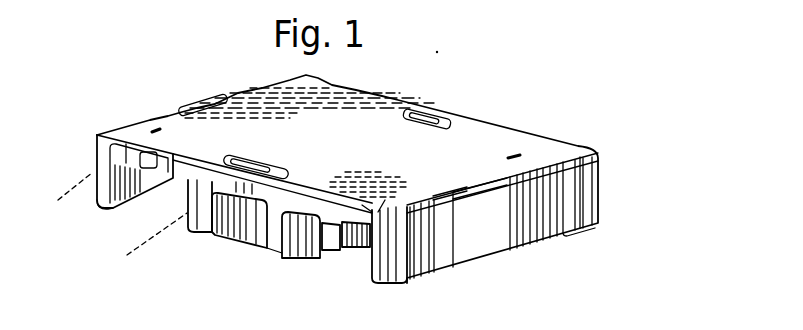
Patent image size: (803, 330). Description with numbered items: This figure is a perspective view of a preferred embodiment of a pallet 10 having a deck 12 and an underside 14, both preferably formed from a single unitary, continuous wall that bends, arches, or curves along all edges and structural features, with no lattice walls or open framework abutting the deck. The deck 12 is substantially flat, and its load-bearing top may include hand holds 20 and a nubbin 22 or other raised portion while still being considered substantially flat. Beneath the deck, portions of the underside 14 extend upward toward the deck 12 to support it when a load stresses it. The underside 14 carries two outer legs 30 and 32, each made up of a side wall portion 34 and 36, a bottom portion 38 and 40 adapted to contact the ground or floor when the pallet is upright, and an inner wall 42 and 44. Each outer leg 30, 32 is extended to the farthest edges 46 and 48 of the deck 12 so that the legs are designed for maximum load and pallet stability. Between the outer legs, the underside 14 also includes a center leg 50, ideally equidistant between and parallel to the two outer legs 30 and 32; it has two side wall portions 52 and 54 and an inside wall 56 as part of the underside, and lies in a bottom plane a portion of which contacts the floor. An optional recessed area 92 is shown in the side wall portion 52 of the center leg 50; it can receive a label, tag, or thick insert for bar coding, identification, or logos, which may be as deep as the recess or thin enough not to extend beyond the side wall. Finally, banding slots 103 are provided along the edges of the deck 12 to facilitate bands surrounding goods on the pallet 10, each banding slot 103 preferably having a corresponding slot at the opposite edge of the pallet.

The pallet 10 is at (553, 150).
The deck 12 is at (513, 142).
The underside 14 is at (213, 240).
The hand holds 20 is at (453, 113).
The nubbin 22 is at (190, 106).
The outer leg 30 is at (507, 233).
The outer leg 32 is at (100, 157).
The side wall portion 34 is at (433, 240).
The side wall portion 36 is at (61, 194).
The bottom portion 38 is at (405, 286).
The bottom portion 40 is at (103, 207).
The inner wall 42 is at (365, 278).
The inner wall 44 is at (143, 202).
The farthest edge 46 is at (558, 170).
The farthest edge 48 is at (147, 120).
The center leg 50 is at (288, 242).
The side wall portion 52 is at (270, 230).
The side wall portion 54 is at (338, 242).
The inside wall 56 is at (143, 244).
The recessed area 92 is at (233, 223).
The banding slots 103 is at (592, 220).